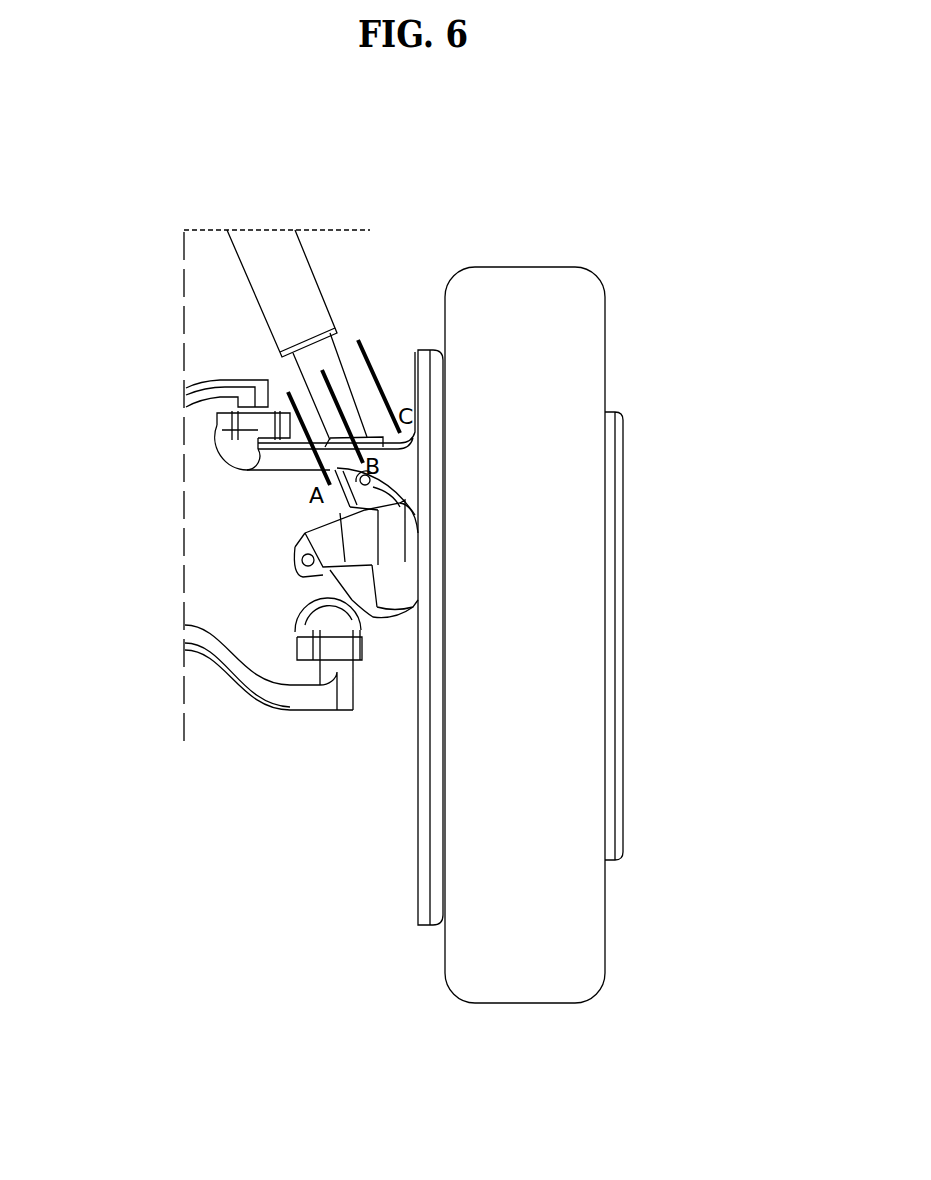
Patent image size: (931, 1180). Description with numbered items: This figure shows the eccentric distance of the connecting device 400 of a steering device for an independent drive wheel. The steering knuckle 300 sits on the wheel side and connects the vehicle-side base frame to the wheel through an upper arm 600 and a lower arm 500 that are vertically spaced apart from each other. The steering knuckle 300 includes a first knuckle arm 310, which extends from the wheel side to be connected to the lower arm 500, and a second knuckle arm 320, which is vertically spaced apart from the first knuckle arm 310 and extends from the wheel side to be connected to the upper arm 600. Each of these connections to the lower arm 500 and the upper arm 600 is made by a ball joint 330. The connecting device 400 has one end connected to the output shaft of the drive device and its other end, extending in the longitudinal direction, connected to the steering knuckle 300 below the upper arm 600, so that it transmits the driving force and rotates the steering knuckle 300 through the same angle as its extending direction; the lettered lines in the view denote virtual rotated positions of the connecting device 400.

The steering knuckle 300 is at (612, 917).
The first knuckle arm 310 is at (400, 583).
The second knuckle arm 320 is at (403, 476).
The ball joint 330 is at (213, 443).
The connecting device 400 is at (263, 246).
The lower arm 500 is at (302, 700).
The upper arm 600 is at (200, 396).